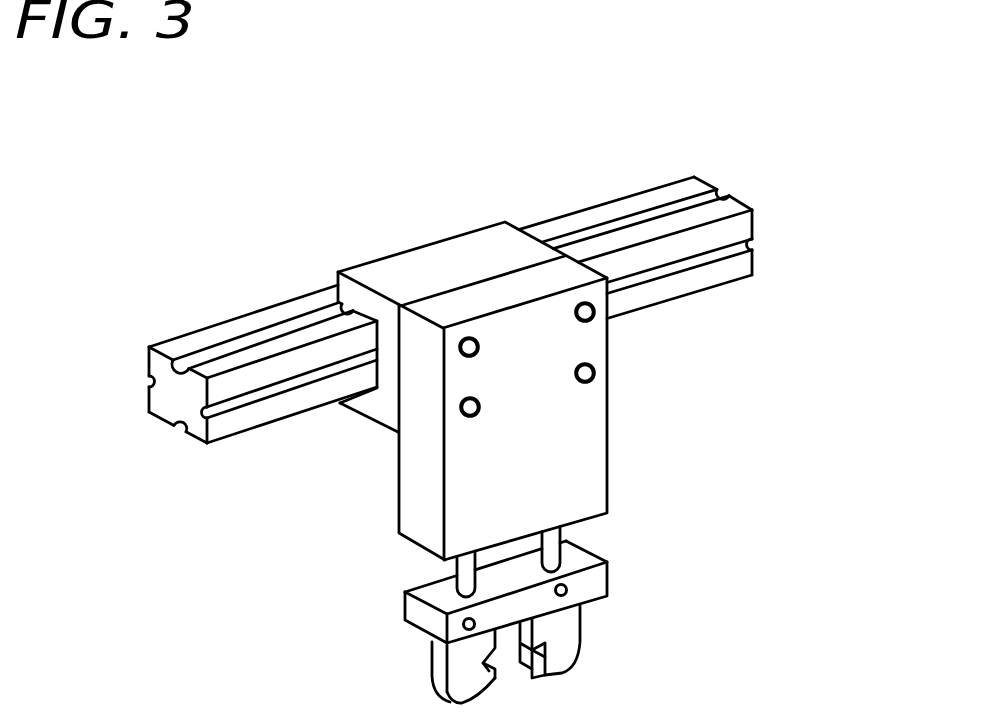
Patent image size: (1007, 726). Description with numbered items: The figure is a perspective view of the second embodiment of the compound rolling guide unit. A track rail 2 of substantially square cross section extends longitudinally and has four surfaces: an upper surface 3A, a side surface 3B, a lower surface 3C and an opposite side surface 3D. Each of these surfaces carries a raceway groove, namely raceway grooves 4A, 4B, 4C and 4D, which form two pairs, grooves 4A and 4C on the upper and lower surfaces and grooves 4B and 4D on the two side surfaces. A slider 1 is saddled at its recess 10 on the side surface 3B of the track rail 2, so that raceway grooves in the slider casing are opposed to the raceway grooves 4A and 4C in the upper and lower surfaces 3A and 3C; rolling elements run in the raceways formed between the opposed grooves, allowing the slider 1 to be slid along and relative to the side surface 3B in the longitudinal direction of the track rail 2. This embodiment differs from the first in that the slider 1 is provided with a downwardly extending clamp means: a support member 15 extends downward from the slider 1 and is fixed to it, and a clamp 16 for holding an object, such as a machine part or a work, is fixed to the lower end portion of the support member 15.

The slider 1 is at (439, 265).
The track rail 2 is at (418, 297).
The upper surface 3A is at (600, 218).
The side surface 3B is at (657, 292).
The lower surface 3C is at (192, 438).
The side surface 3D is at (144, 400).
The raceway groove 4A is at (259, 338).
The raceway groove 4B is at (706, 259).
The raceway groove 4C is at (177, 429).
The raceway groove 4D is at (147, 381).
The recess 10 is at (378, 389).
The support member 15 is at (587, 477).
The clamp 16 is at (565, 650).